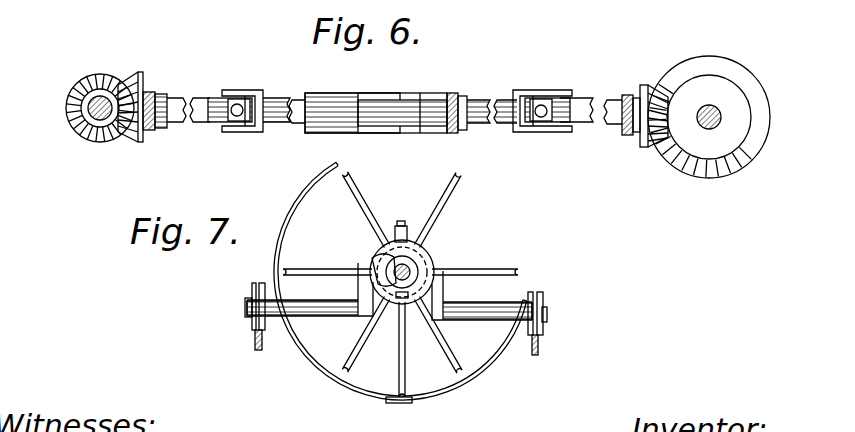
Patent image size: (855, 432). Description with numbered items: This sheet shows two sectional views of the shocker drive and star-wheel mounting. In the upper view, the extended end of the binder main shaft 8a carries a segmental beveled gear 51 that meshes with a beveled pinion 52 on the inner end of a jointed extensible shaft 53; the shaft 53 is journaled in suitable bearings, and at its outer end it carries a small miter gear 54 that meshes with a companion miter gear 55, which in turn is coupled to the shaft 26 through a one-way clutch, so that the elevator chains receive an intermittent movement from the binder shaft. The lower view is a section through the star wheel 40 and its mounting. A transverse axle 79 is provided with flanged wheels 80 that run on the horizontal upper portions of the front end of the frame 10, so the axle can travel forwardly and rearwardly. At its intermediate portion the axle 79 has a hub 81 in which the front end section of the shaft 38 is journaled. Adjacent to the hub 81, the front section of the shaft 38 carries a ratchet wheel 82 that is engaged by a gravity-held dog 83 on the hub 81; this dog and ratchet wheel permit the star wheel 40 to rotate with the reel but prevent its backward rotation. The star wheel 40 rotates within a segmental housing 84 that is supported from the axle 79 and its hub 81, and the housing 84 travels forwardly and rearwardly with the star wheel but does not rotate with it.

In FIG. 6, the companion miter gear 55 is at (107, 88).
In FIG. 6, the shaft 26 is at (89, 117).
In FIG. 6, the small miter gear 54 is at (138, 85).
In FIG. 6, the jointed extensible shaft 53 is at (449, 98).
In FIG. 6, the beveled pinion 52 is at (642, 136).
In FIG. 6, the segmental beveled gear 51 is at (734, 162).
In FIG. 6, the main shaft of the binder 8a is at (707, 122).
In FIG. 7, the segmental housing 84 is at (366, 392).
In FIG. 7, the transverse axle 79 is at (334, 317).
In FIG. 7, the flanged wheels 80 is at (246, 303).
In FIG. 7, the frame 10 is at (254, 341).
In FIG. 7, the star wheel 40 is at (474, 268).
In FIG. 7, the shaft 38 is at (383, 285).
In FIG. 7, the hub 81 is at (380, 267).
In FIG. 7, the ratchet wheel 82 is at (395, 224).
In FIG. 7, the gravity-held dog 83 is at (405, 226).